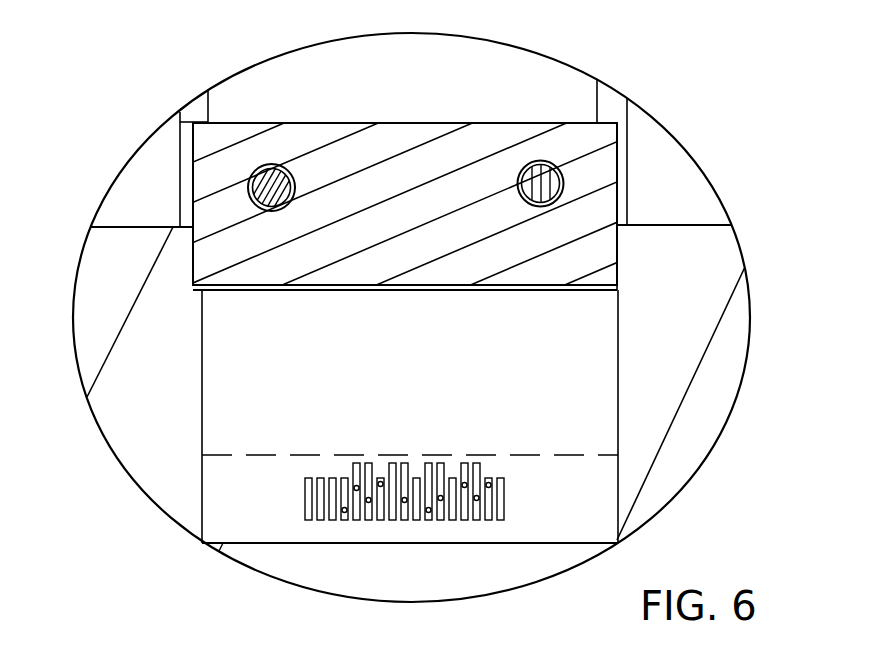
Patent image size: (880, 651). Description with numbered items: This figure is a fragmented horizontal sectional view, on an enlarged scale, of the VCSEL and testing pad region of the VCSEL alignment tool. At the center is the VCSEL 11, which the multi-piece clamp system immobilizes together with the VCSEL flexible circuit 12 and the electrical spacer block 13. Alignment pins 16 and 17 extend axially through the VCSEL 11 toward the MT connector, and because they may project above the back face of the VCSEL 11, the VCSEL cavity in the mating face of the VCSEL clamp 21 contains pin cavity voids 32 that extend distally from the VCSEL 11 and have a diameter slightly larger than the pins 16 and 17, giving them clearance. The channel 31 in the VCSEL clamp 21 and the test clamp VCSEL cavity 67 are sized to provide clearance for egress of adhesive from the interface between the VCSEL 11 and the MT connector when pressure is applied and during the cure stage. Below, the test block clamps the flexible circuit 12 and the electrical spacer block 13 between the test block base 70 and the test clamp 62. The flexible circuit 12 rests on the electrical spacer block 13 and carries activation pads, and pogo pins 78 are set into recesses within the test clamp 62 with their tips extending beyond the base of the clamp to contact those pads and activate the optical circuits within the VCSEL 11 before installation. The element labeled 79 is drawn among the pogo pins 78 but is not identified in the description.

The VCSEL 11 is at (418, 170).
The VCSEL flexible circuit 12 is at (538, 98).
The electrical spacer block 13 is at (583, 512).
The alignment pin 16 is at (536, 178).
The alignment pin 17 is at (287, 170).
The VCSEL clamp 21 is at (127, 200).
The channel 31 is at (210, 107).
The pin cavity void 32 is at (262, 176).
The test clamp 62 is at (103, 305).
The test clamp VCSEL cavity 67 is at (245, 292).
The test block base 70 is at (199, 407).
The pogo pin 78 is at (475, 512).
The contact element 79 is at (335, 510).